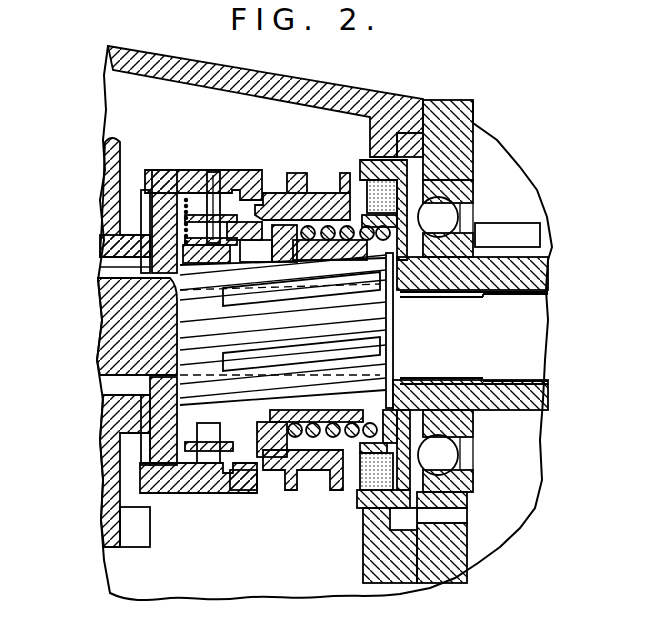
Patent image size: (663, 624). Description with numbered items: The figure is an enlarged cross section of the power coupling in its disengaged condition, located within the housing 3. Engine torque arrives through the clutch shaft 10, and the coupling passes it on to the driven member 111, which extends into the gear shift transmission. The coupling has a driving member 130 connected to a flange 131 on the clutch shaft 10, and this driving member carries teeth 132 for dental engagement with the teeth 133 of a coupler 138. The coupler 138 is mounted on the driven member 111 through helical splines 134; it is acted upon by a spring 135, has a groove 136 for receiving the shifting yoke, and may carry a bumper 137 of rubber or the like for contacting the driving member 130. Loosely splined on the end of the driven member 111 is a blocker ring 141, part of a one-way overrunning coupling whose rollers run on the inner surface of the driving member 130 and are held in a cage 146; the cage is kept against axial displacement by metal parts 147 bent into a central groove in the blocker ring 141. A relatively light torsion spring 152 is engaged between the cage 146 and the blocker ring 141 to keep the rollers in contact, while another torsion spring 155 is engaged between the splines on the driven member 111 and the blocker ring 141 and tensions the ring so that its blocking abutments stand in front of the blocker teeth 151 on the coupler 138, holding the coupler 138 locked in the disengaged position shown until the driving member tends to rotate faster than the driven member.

The housing 3 is at (133, 58).
The clutch shaft 10 is at (520, 353).
The driven member 111 is at (450, 277).
The driving member 130 is at (170, 172).
The flange 131 is at (163, 214).
The teeth 132 is at (263, 170).
The teeth 133 is at (284, 180).
The helical splines 134 is at (175, 360).
The spring 135 is at (390, 100).
The groove 136 is at (325, 487).
The bumper 137 is at (290, 495).
The coupler 138 is at (340, 175).
The blocker ring 141 is at (160, 290).
The cage 146 is at (246, 166).
The metal parts 147 is at (185, 168).
The blocker teeth 151 is at (243, 250).
The torsion spring 152 is at (185, 240).
The torsion spring 155 is at (235, 263).